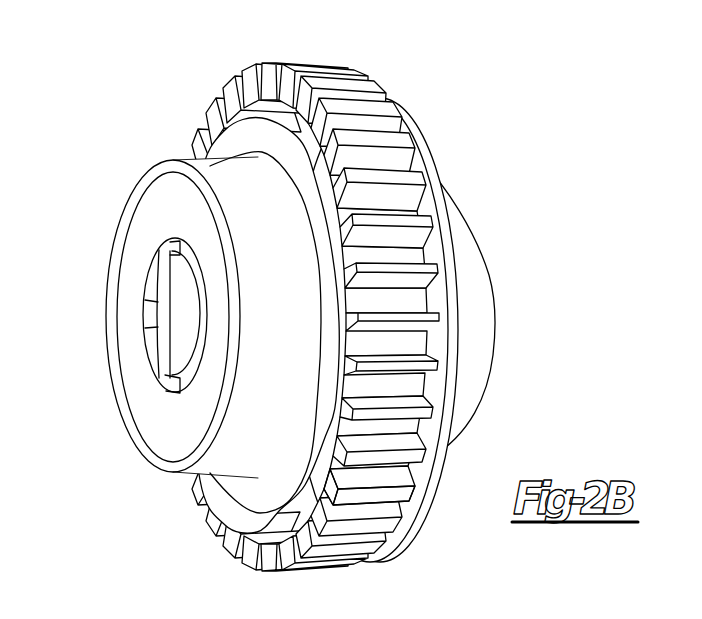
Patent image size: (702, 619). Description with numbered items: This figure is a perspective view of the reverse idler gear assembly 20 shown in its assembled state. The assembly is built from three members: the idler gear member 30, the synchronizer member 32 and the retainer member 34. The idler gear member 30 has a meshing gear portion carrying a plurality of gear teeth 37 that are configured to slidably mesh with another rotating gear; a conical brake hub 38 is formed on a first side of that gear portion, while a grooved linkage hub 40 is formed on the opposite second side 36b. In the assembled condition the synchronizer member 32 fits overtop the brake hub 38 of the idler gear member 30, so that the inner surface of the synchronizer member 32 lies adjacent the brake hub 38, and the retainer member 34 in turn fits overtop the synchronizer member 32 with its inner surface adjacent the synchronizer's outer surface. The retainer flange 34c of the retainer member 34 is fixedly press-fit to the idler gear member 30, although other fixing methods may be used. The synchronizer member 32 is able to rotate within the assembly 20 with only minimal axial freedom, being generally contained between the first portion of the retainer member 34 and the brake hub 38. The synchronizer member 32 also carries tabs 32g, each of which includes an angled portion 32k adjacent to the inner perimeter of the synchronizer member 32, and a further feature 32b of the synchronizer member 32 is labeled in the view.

The idler gear assembly 20 is at (462, 86).
The idler gear member 30 is at (423, 157).
The synchronizer member 32 is at (167, 317).
The hub inner ring 32b is at (128, 383).
The tabs 32g is at (200, 331).
The angled portion 32k is at (197, 311).
The retainer member 34 is at (244, 407).
The retainer flange 34c is at (257, 498).
The second side 36b is at (458, 312).
The gear teeth 37 is at (384, 490).
The conical brake hub 38 is at (186, 261).
The grooved linkage hub 40 is at (470, 291).